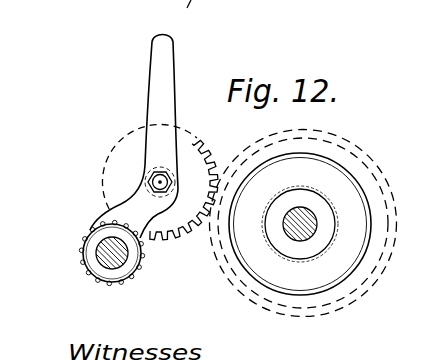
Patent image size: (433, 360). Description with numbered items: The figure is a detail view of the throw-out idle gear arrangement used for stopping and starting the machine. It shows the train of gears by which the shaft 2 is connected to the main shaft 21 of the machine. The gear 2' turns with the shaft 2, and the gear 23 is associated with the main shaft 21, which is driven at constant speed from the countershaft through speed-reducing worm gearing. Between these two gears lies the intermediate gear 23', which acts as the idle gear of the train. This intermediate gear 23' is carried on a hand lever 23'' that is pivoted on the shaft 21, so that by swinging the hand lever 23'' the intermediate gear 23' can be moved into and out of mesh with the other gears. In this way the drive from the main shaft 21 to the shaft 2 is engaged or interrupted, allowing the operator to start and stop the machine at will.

The shaft 2 is at (300, 224).
The gear 2' is at (303, 244).
The main shaft 21 is at (104, 263).
The gear 23 is at (129, 271).
The intermediate gear 23' is at (184, 212).
The hand lever 23'' is at (122, 166).